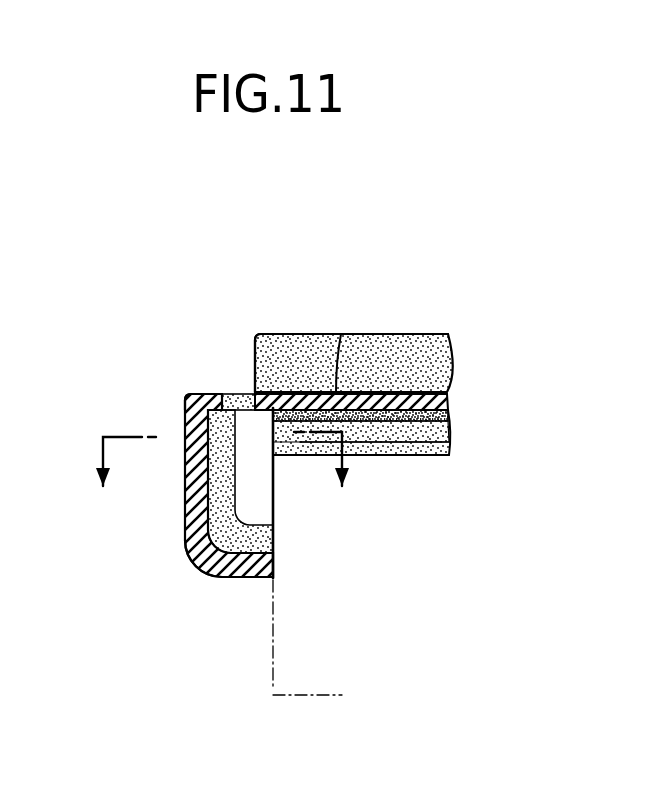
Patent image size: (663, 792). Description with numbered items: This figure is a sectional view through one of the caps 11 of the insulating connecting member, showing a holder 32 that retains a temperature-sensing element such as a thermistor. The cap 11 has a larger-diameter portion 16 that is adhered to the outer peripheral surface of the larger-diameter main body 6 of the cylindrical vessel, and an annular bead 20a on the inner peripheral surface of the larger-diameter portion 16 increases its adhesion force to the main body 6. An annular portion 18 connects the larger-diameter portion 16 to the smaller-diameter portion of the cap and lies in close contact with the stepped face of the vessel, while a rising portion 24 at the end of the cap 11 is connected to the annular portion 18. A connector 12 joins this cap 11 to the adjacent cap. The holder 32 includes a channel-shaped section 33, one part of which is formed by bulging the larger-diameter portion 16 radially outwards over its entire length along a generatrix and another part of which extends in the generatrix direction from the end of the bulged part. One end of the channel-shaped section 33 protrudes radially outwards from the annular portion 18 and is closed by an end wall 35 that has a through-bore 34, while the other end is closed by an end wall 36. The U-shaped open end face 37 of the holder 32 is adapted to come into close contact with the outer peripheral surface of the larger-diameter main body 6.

The larger-diameter main body 6 is at (273, 655).
The cap 11 is at (397, 332).
The connector 12 is at (228, 488).
The larger-diameter portion 16 is at (446, 425).
The annular portion 18 is at (418, 397).
The annular bead 20a is at (405, 438).
The rising portion 24 is at (306, 332).
The holder 32 is at (178, 402).
The channel-shaped section 33 is at (193, 463).
The through-bore 34 is at (232, 393).
The end wall 35 is at (213, 393).
The end wall 36 is at (230, 565).
The U-shaped open end face 37 is at (274, 525).